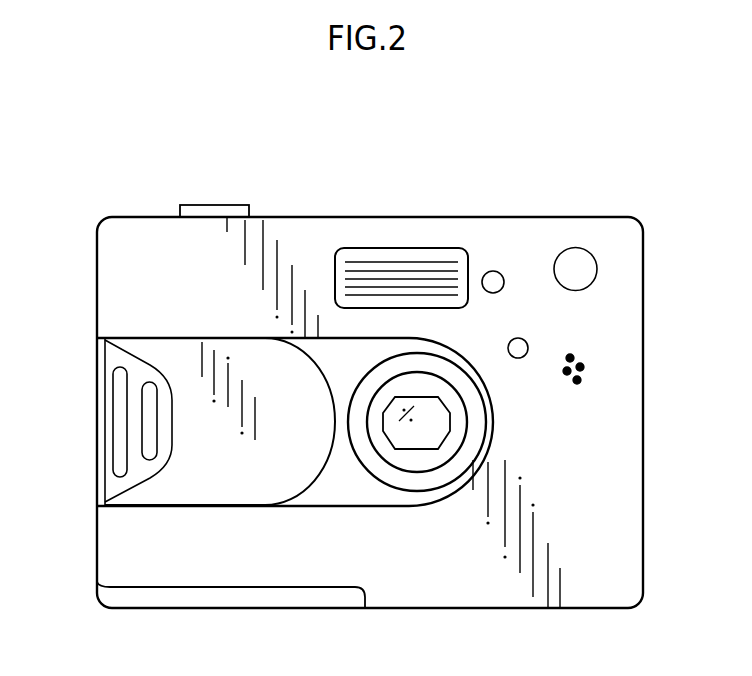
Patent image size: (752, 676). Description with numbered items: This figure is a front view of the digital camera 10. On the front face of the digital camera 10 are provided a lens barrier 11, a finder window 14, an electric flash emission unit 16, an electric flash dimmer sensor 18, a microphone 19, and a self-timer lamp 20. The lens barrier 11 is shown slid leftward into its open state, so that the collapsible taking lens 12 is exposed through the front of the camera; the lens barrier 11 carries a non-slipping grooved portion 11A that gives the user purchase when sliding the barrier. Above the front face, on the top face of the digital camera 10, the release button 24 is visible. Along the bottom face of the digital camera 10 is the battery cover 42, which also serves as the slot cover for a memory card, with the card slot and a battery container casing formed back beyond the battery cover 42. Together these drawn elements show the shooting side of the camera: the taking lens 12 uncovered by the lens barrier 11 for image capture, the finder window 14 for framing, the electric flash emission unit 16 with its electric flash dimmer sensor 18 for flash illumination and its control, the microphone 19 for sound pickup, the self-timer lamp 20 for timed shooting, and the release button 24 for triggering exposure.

The digital camera 10 is at (312, 206).
The release button 24 is at (205, 210).
The electric flash emission unit 16 is at (406, 255).
The electric flash dimmer sensor 18 is at (493, 279).
The finder window 14 is at (572, 267).
The microphone 19 is at (583, 364).
The self-timer lamp 20 is at (523, 356).
The lens barrier 11 is at (196, 355).
The non-slipping grooved portion 11A is at (121, 452).
The collapsible taking lens 12 is at (420, 433).
The battery cover 42 is at (212, 598).